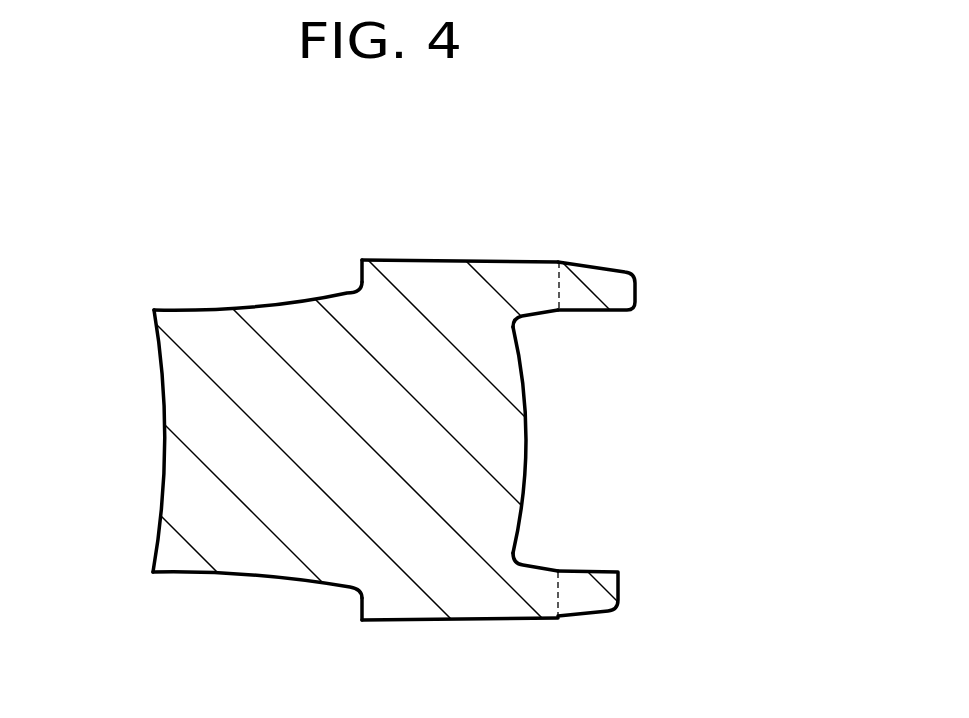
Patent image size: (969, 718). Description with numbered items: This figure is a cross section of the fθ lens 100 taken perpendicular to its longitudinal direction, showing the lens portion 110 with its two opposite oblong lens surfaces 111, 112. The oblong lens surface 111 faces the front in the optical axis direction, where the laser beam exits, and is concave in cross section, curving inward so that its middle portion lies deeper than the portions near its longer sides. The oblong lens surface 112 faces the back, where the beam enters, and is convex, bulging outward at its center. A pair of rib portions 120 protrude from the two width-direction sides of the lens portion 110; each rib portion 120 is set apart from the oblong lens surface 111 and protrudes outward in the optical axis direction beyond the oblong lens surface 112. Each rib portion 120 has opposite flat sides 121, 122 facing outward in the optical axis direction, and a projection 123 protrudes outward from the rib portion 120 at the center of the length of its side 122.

The fθ lens 100 is at (484, 435).
The lens portion 110 is at (207, 387).
The oblong lens surface 111 is at (163, 453).
The oblong lens surface 112 is at (527, 440).
The rib portion 120 is at (520, 280).
The side 121 is at (362, 269).
The side 122 is at (569, 299).
The projection 123 is at (646, 439).